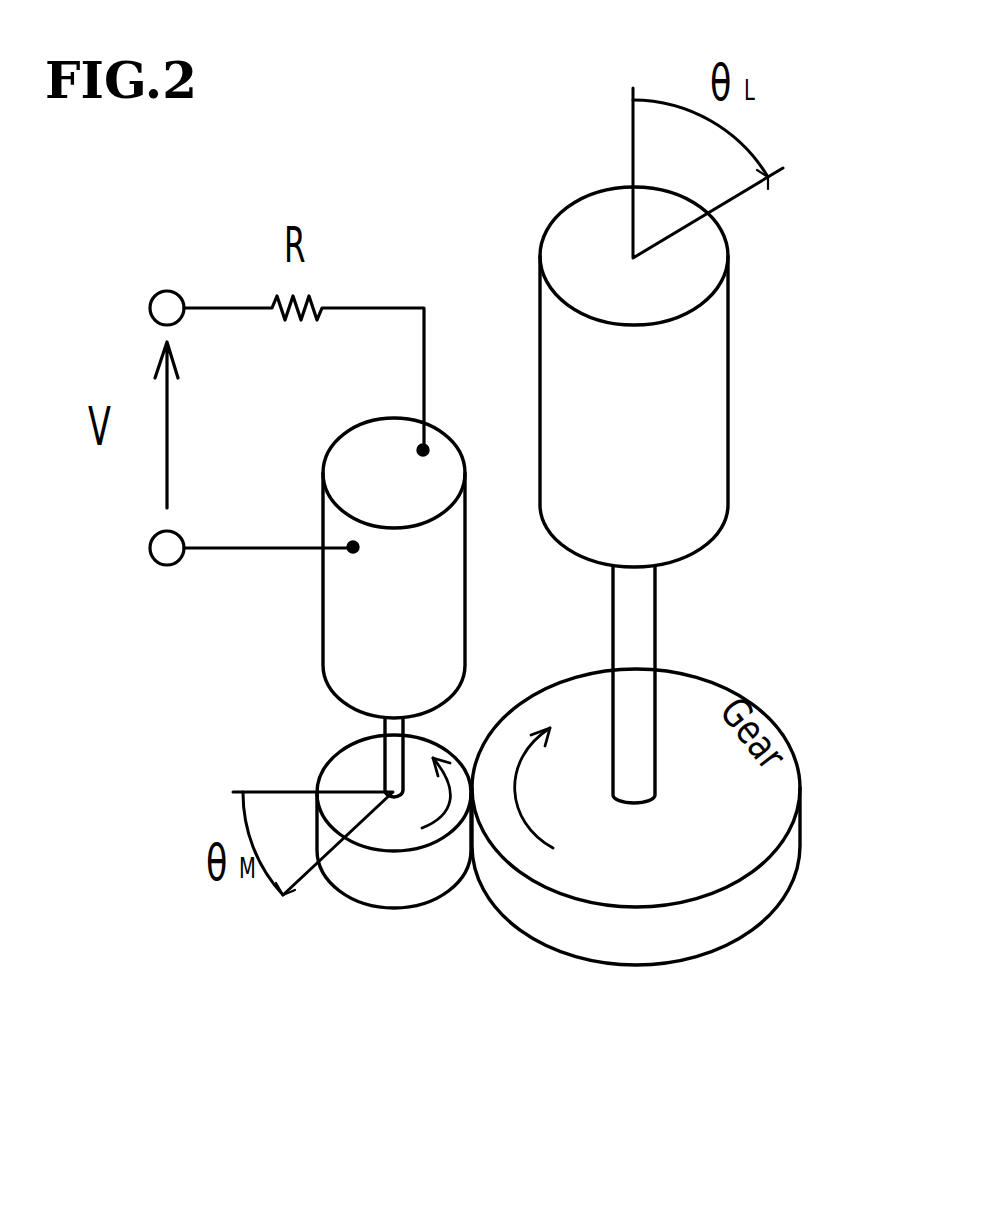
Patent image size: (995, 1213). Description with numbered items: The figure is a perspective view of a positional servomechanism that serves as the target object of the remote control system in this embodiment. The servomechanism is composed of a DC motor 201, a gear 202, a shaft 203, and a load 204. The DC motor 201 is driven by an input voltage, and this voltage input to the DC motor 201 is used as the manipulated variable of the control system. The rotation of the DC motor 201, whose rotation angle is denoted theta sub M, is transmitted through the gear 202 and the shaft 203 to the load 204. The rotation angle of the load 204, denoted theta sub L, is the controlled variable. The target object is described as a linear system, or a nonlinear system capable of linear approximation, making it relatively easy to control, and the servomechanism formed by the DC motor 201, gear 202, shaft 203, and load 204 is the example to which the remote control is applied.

The DC motor 201 is at (323, 635).
The gear 202 is at (463, 923).
The shaft 203 is at (655, 625).
The load 204 is at (727, 381).